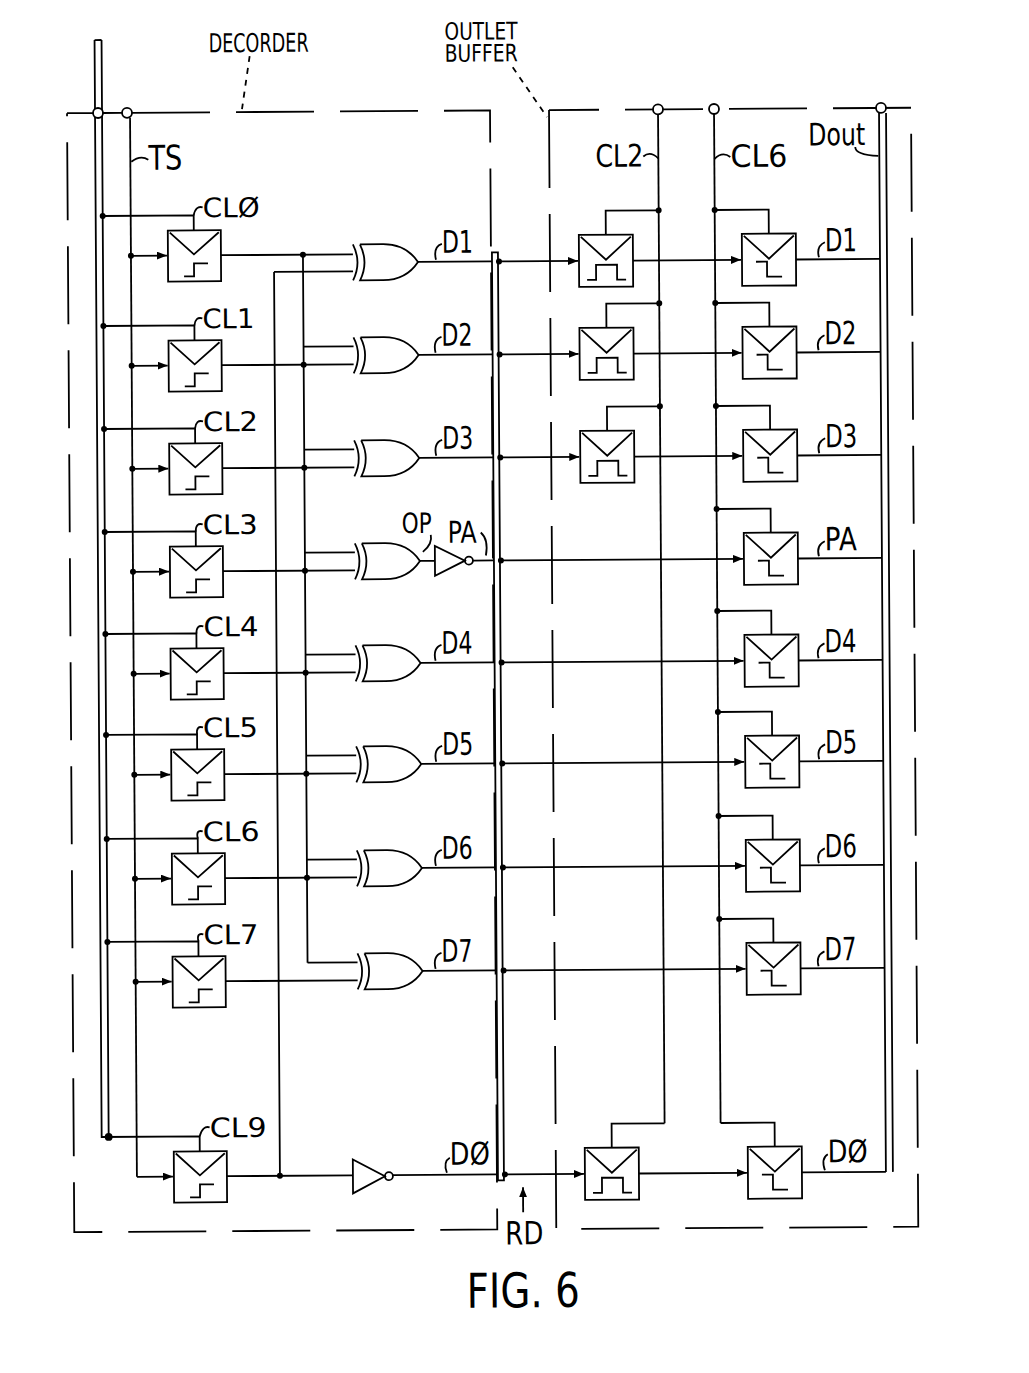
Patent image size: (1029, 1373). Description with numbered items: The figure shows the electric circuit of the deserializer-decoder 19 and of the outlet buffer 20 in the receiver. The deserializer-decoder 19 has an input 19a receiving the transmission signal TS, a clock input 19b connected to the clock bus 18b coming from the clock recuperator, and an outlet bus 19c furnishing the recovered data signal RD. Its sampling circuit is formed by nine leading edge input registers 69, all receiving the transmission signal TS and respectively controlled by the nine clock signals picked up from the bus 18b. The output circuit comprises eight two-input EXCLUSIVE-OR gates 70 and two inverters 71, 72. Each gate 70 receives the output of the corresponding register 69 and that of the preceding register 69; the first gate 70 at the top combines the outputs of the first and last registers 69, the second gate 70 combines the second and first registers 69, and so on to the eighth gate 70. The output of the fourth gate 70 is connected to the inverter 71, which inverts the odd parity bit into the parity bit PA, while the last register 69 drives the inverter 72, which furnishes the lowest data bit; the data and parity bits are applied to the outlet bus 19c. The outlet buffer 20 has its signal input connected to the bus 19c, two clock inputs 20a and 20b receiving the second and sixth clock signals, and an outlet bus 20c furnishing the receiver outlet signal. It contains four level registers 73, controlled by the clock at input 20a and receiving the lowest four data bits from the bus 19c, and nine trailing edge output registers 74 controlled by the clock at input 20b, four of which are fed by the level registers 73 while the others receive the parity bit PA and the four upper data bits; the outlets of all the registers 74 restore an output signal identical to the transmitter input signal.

The clock bus 18b is at (106, 52).
The deserializer-decoder 19 is at (442, 108).
The input 19a is at (128, 108).
The clock input 19b is at (93, 109).
The outlet bus 19c is at (495, 253).
The outlet buffer 20 is at (608, 108).
The clock input 20a is at (677, 90).
The clock input 20b is at (725, 86).
The outlet bus 20c is at (881, 108).
The leading edge input register 69 is at (222, 240).
The EXCLUSIVE-OR gate 70 is at (383, 245).
The inverter 71 is at (447, 578).
The inverter 72 is at (372, 1191).
The level register 73 is at (592, 238).
The trailing edge output register 74 is at (790, 238).